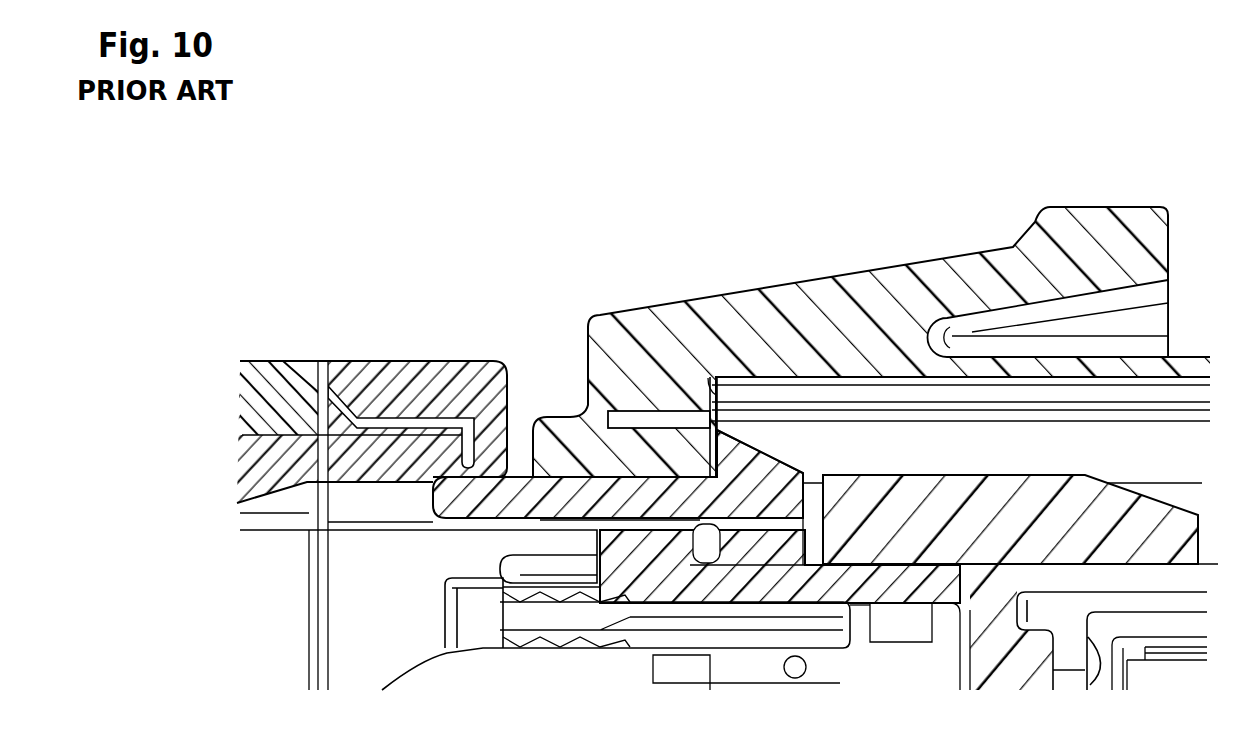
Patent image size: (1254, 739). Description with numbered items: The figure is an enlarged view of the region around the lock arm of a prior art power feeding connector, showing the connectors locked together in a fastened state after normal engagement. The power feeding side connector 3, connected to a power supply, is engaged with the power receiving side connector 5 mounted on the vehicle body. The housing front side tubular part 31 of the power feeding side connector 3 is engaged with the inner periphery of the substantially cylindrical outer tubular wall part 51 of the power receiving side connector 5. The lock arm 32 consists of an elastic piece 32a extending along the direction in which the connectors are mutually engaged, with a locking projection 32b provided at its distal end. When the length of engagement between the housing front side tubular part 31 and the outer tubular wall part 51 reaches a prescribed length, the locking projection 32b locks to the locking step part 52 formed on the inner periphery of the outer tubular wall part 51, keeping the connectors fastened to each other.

The power feeding side connector 3 is at (285, 348).
The power receiving side connector 5 is at (871, 269).
The housing front side tubular part 31 is at (932, 510).
The lock arm 32 is at (639, 356).
The elastic piece 32a is at (560, 500).
The locking projection 32b is at (768, 455).
The outer tubular wall part 51 is at (640, 370).
The locking step part 52 is at (720, 430).